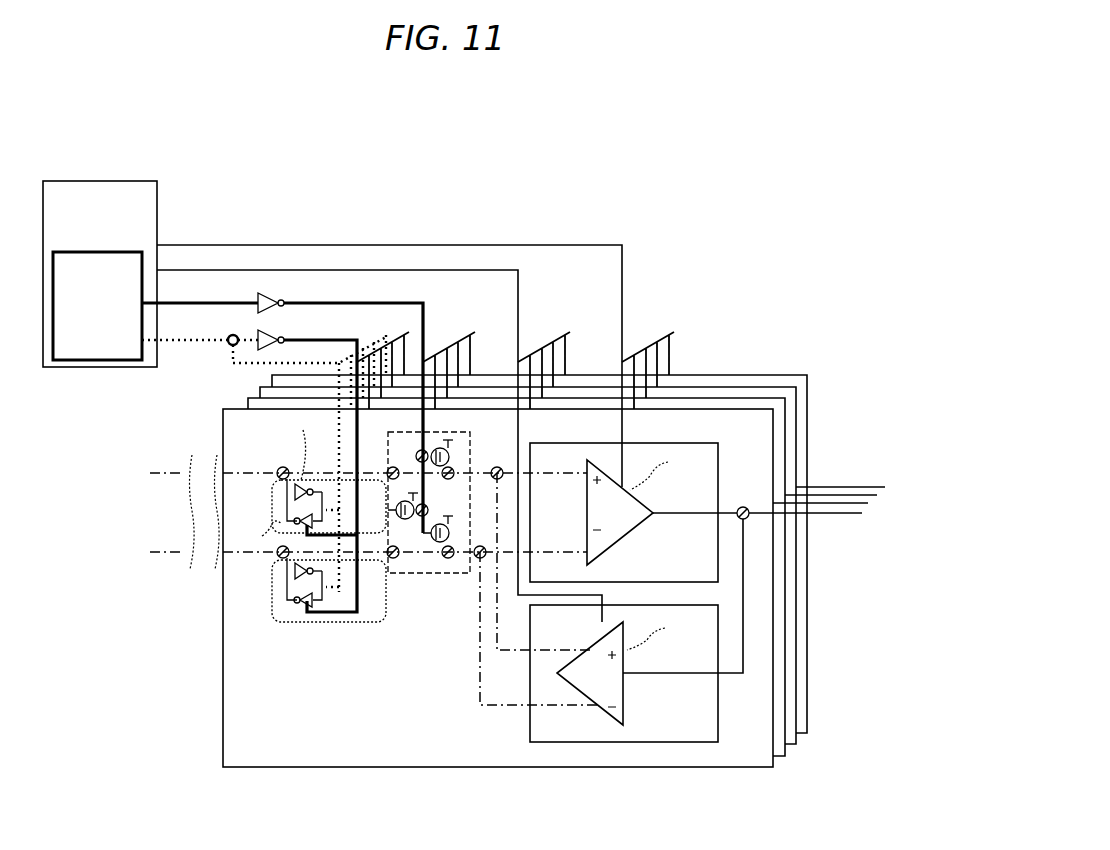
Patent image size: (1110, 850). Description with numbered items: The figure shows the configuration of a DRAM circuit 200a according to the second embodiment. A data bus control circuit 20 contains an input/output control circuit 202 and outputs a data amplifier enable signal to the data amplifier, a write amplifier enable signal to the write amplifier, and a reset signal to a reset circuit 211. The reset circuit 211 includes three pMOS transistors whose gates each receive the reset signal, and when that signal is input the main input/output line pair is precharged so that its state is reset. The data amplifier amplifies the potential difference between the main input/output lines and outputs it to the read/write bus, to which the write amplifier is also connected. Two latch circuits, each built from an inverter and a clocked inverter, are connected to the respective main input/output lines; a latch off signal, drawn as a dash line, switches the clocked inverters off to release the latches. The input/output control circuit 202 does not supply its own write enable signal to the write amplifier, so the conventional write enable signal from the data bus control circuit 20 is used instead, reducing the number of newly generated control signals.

The DRAM circuit 200a is at (88, 110).
The data bus control circuit 20 is at (130, 178).
The input/output control circuit 202 is at (92, 373).
The reset circuit 211 is at (404, 576).